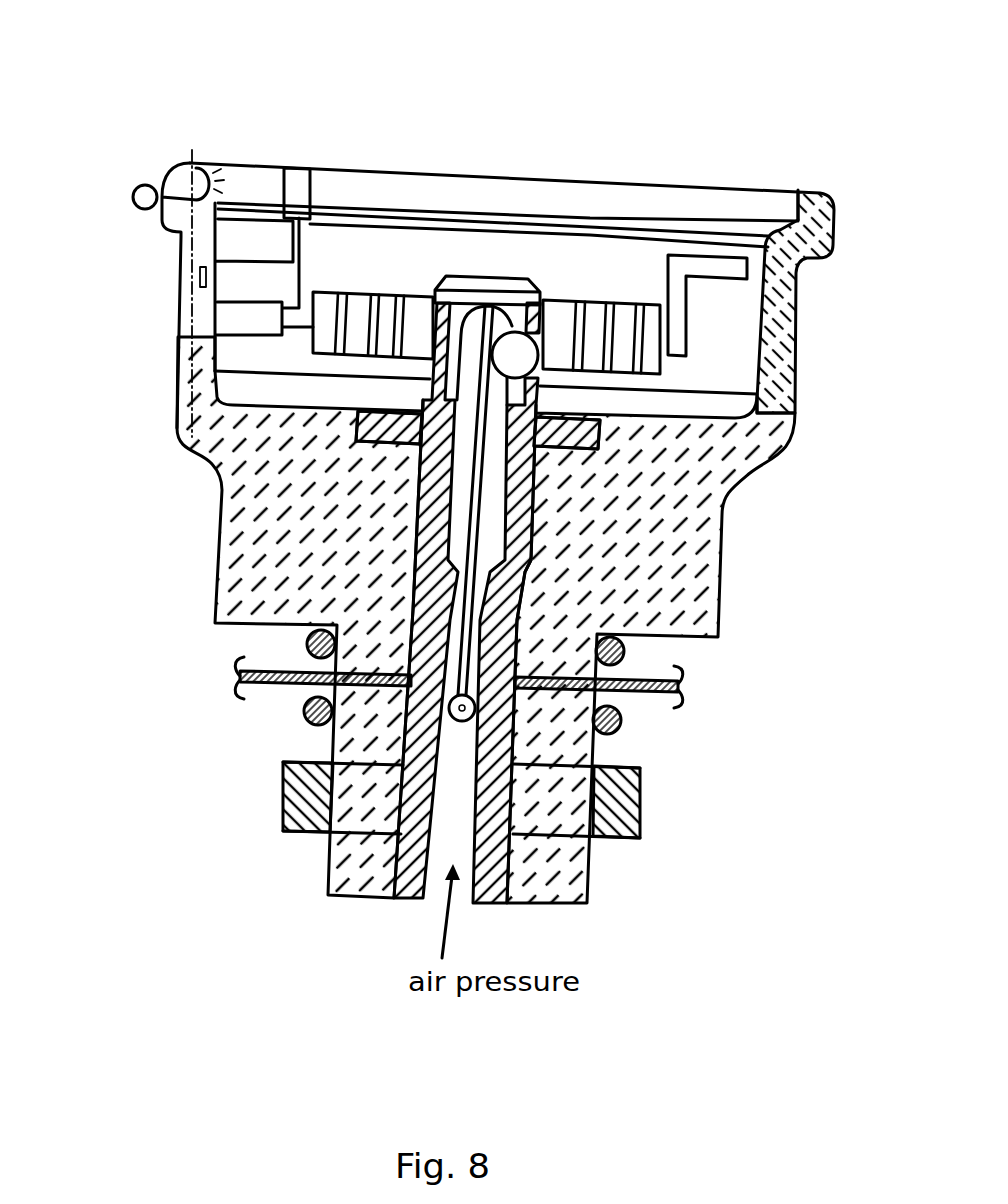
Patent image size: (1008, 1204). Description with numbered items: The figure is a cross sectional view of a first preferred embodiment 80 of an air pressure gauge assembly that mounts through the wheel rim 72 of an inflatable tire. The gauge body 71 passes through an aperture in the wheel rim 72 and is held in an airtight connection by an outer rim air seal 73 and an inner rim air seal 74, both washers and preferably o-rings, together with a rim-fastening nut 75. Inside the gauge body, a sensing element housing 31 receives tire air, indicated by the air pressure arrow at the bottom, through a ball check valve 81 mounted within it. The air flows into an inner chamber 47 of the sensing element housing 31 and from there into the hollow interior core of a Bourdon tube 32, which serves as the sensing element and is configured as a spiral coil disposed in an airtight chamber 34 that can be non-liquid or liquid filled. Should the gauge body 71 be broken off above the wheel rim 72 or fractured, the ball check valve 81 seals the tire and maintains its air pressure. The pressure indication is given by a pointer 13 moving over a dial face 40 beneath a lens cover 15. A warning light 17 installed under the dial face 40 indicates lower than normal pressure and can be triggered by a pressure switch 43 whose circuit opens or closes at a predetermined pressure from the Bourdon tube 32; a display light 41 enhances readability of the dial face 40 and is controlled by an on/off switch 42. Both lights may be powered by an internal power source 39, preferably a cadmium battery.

The pointer 13 is at (701, 266).
The lens cover 15 is at (520, 185).
The warning light 17 is at (302, 177).
The sensing element housing 31 is at (240, 583).
The Bourdon tube 32 is at (313, 336).
The airtight chamber 34 is at (723, 333).
The internal power source 39 is at (216, 256).
The dial face 40 is at (615, 226).
The display light 41 is at (190, 160).
The on/off switch 42 is at (140, 193).
The pressure switch 43 is at (240, 323).
The inner chamber 47 is at (487, 526).
The gauge body 71 is at (700, 561).
The wheel rim 72 is at (263, 683).
The outer rim air seal 73 is at (627, 653).
The inner rim air seal 74 is at (623, 723).
The rim-fastening nut 75 is at (645, 846).
The first preferred embodiment of the air pressure gauge assembly 80 is at (286, 982).
The ball check valve 81 is at (283, 833).